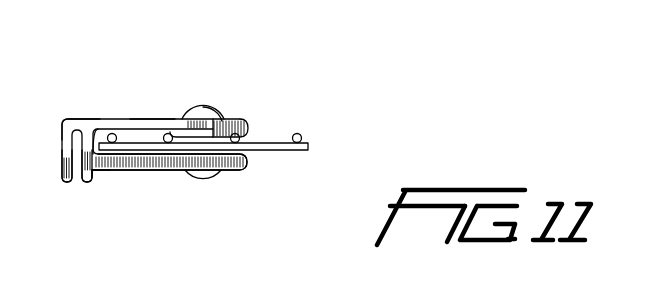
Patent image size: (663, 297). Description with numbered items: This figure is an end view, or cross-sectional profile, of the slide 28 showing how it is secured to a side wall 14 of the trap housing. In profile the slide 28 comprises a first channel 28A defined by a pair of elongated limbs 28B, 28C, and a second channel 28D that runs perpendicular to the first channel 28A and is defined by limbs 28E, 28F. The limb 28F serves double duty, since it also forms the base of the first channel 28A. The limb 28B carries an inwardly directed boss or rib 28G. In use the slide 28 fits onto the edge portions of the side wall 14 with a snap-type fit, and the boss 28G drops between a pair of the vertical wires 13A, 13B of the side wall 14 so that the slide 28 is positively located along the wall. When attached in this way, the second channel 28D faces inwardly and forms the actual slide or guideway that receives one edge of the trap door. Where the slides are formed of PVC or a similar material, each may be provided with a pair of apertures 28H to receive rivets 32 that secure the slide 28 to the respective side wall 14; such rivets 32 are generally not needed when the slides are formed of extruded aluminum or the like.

The slide 28 is at (130, 114).
The first channel 28A is at (125, 128).
The elongated limb 28B is at (153, 118).
The elongated limb 28C is at (158, 170).
The second channel 28D is at (80, 181).
The limb 28E is at (65, 181).
The limb 28F is at (97, 172).
The boss or rib 28G is at (251, 131).
The apertures 28H is at (230, 105).
The vertical wire 13A is at (166, 128).
The vertical wire 13B is at (299, 131).
The rivets 32 is at (204, 106).
The side wall 14 is at (283, 152).